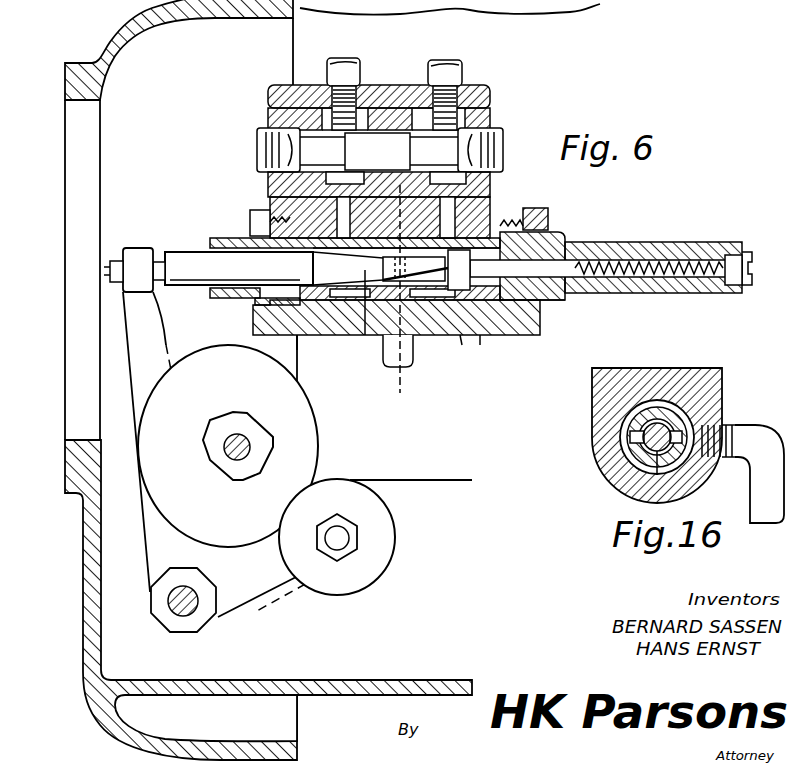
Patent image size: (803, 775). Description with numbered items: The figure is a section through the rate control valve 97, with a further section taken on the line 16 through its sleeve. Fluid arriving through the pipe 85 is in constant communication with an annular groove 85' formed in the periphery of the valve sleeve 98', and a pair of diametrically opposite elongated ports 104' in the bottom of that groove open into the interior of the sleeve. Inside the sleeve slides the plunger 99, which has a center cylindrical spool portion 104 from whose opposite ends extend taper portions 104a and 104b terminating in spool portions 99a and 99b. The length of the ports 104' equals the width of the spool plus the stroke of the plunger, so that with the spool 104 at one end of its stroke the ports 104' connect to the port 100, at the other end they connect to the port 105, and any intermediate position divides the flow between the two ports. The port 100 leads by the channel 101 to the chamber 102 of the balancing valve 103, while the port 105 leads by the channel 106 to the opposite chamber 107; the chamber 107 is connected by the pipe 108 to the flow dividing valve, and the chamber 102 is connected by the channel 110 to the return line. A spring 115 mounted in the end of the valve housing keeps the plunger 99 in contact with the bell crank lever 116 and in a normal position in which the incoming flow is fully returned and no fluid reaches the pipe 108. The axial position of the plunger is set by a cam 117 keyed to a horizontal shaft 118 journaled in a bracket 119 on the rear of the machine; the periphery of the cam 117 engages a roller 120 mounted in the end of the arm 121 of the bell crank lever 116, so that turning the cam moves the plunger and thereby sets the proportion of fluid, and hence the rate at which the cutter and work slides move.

In FIG. 6, the bracket 119 is at (82, 578).
In FIG. 6, the chamber 102 is at (488, 124).
In FIG. 6, the pipe 108 is at (358, 70).
In FIG. 6, the channel 110 is at (462, 72).
In FIG. 6, the chamber 107 is at (300, 136).
In FIG. 6, the balancing valve 103 is at (378, 138).
In FIG. 6, the channel 106 is at (330, 184).
In FIG. 6, the port 100 is at (470, 215).
In FIG. 6, the channel 101 is at (495, 195).
In FIG. 6, the port 105 is at (258, 234).
In FIG. 6, the spring 115 is at (605, 258).
In FIG. 6, the plunger 99 is at (188, 250).
In FIG. 16, the plunger 99 is at (722, 378).
In FIG. 6, the spool portion 99a is at (262, 302).
In FIG. 6, the spool portion 99b is at (486, 336).
In FIG. 6, the rate control valve 97 is at (538, 336).
In FIG. 16, the rate control valve 97 is at (698, 480).
In FIG. 6, the bell crank lever 116 is at (130, 258).
In FIG. 6, the taper portion 104a is at (332, 302).
In FIG. 6, the center cylindrical spool portion 104 is at (400, 319).
In FIG. 6, the valve sleeve 98' is at (309, 355).
In FIG. 16, the valve sleeve 98' is at (605, 446).
In FIG. 6, the annular groove 85' is at (353, 329).
In FIG. 16, the annular groove 85' is at (606, 475).
In FIG. 6, the elongated ports 104' is at (445, 305).
In FIG. 16, the elongated ports 104' is at (662, 423).
In FIG. 6, the pipe 85 is at (416, 353).
In FIG. 16, the pipe 85 is at (743, 460).
In FIG. 6, the taper portion 104b is at (462, 336).
In FIG. 6, the section line 16 is at (408, 207).
In FIG. 6, the cam 117 is at (312, 447).
In FIG. 6, the horizontal shaft 118 is at (250, 443).
In FIG. 6, the roller 120 is at (340, 483).
In FIG. 6, the arm 121 is at (257, 594).